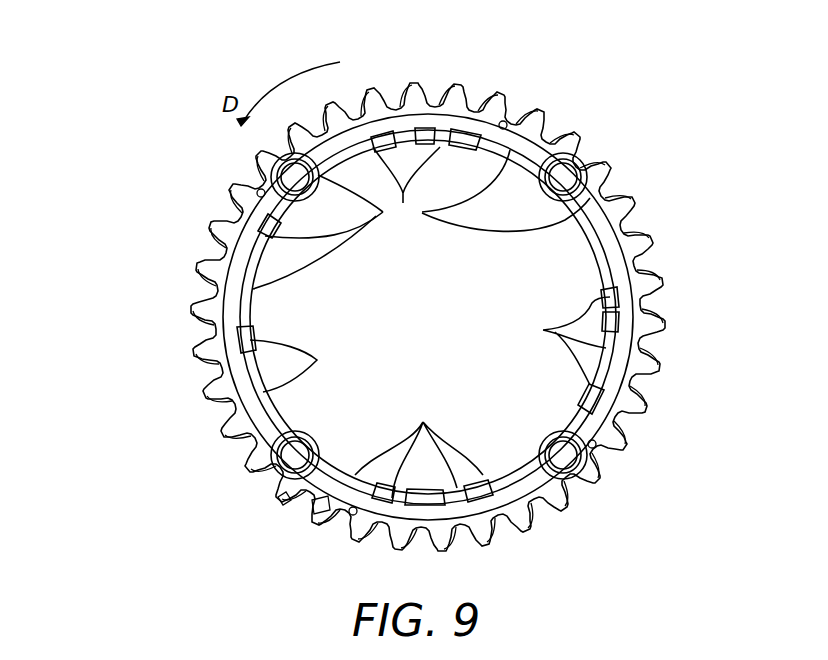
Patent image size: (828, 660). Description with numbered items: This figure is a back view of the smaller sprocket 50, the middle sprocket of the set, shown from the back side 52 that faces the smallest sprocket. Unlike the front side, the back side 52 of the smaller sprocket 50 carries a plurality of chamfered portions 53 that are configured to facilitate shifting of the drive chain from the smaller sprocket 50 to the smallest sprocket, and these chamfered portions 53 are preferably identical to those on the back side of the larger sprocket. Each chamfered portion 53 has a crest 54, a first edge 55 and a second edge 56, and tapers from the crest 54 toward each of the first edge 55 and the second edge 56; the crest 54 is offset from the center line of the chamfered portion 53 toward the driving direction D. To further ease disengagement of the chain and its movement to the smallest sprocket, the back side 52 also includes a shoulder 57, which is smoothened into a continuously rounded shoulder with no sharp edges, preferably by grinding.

The smaller sprocket 50 is at (101, 124).
The back side 52 is at (224, 228).
The chamfered portions 53 is at (555, 126).
The crest 54 is at (330, 467).
The first edge 55 is at (309, 521).
The second edge 56 is at (281, 500).
The shoulder 57 is at (383, 212).